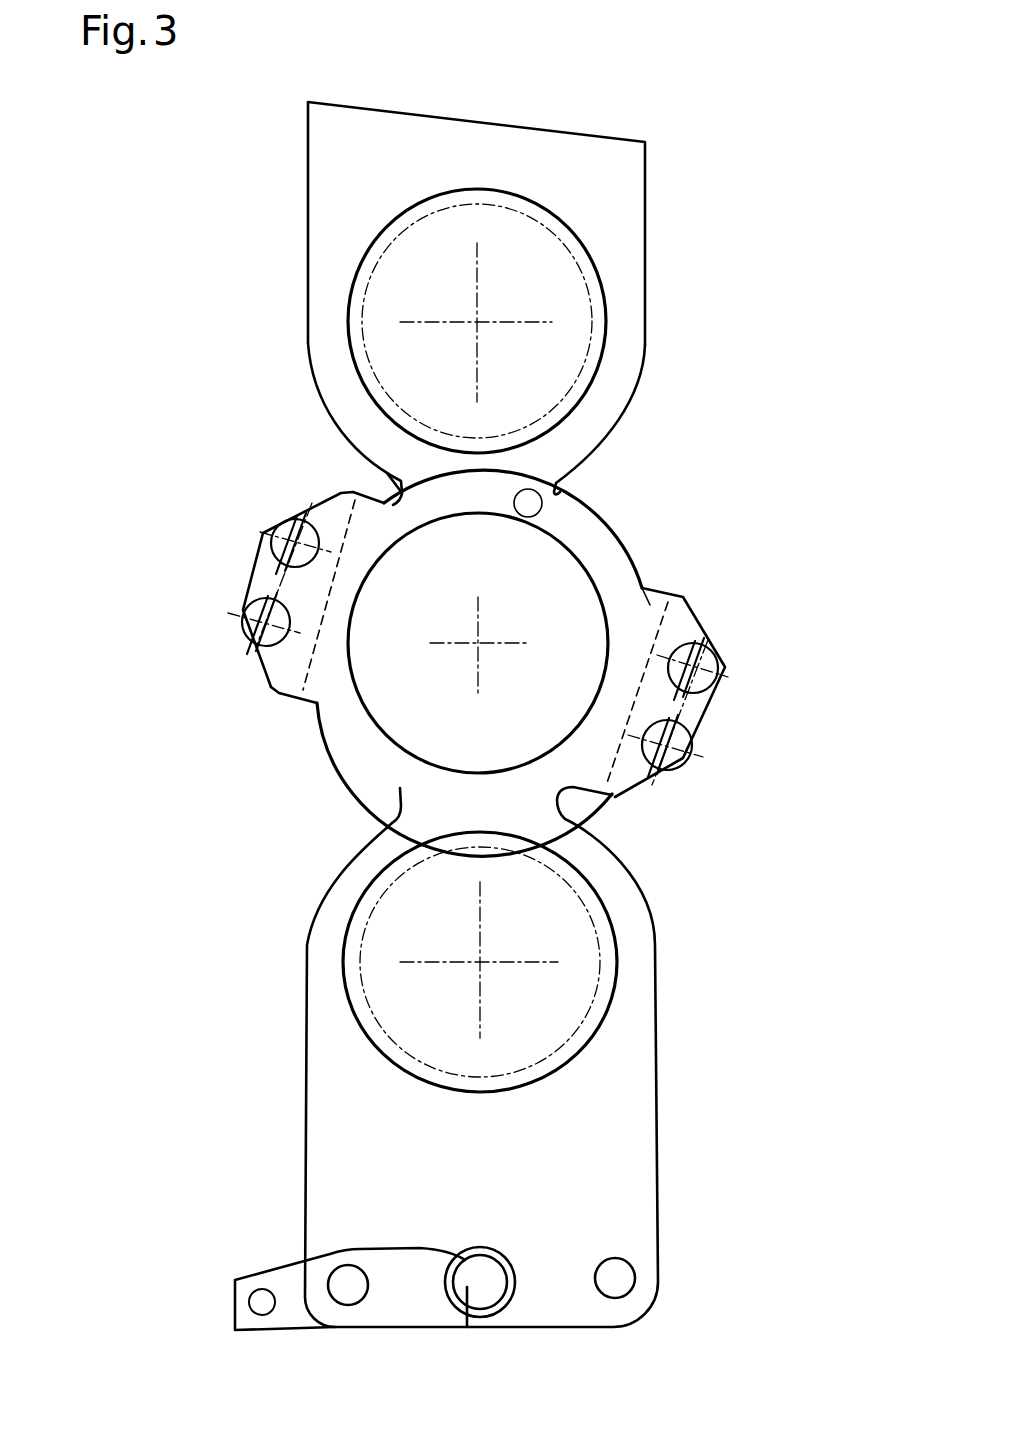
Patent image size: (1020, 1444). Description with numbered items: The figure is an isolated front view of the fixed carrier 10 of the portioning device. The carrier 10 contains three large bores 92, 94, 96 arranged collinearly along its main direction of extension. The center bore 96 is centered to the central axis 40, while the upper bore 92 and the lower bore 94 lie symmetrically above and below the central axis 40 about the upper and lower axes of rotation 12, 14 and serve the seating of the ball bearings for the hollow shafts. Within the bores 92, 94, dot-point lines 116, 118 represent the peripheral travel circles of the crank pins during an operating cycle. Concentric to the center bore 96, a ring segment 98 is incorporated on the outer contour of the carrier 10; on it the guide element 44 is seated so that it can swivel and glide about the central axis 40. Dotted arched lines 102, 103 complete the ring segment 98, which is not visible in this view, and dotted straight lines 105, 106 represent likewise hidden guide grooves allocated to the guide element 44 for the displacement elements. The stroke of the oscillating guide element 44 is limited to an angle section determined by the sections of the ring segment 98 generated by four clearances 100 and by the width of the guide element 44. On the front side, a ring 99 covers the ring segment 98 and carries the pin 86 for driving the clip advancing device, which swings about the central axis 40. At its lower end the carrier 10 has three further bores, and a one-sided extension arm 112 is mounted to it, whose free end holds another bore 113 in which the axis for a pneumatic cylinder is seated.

The carrier 10 is at (610, 1197).
The upper axis of rotation 12 is at (478, 322).
The lower axis of rotation 14 is at (480, 962).
The central axis 40 is at (478, 643).
The guide element 44 is at (690, 713).
The pin 86 is at (530, 502).
The upper bore 92 is at (603, 355).
The lower bore 94 is at (612, 937).
The center bore 96 is at (352, 693).
The ring segment 98 is at (340, 752).
The ring 99 is at (335, 620).
The clearances 100 is at (387, 473).
The dotted arched line 102 is at (297, 660).
The dotted arched line 103 is at (687, 592).
The dotted straight line 105 is at (341, 493).
The dotted straight line 106 is at (612, 795).
The extension arm 112 is at (293, 1277).
The bore 113 is at (253, 1293).
The dot-point line 116 is at (382, 243).
The dot-point line 118 is at (360, 987).